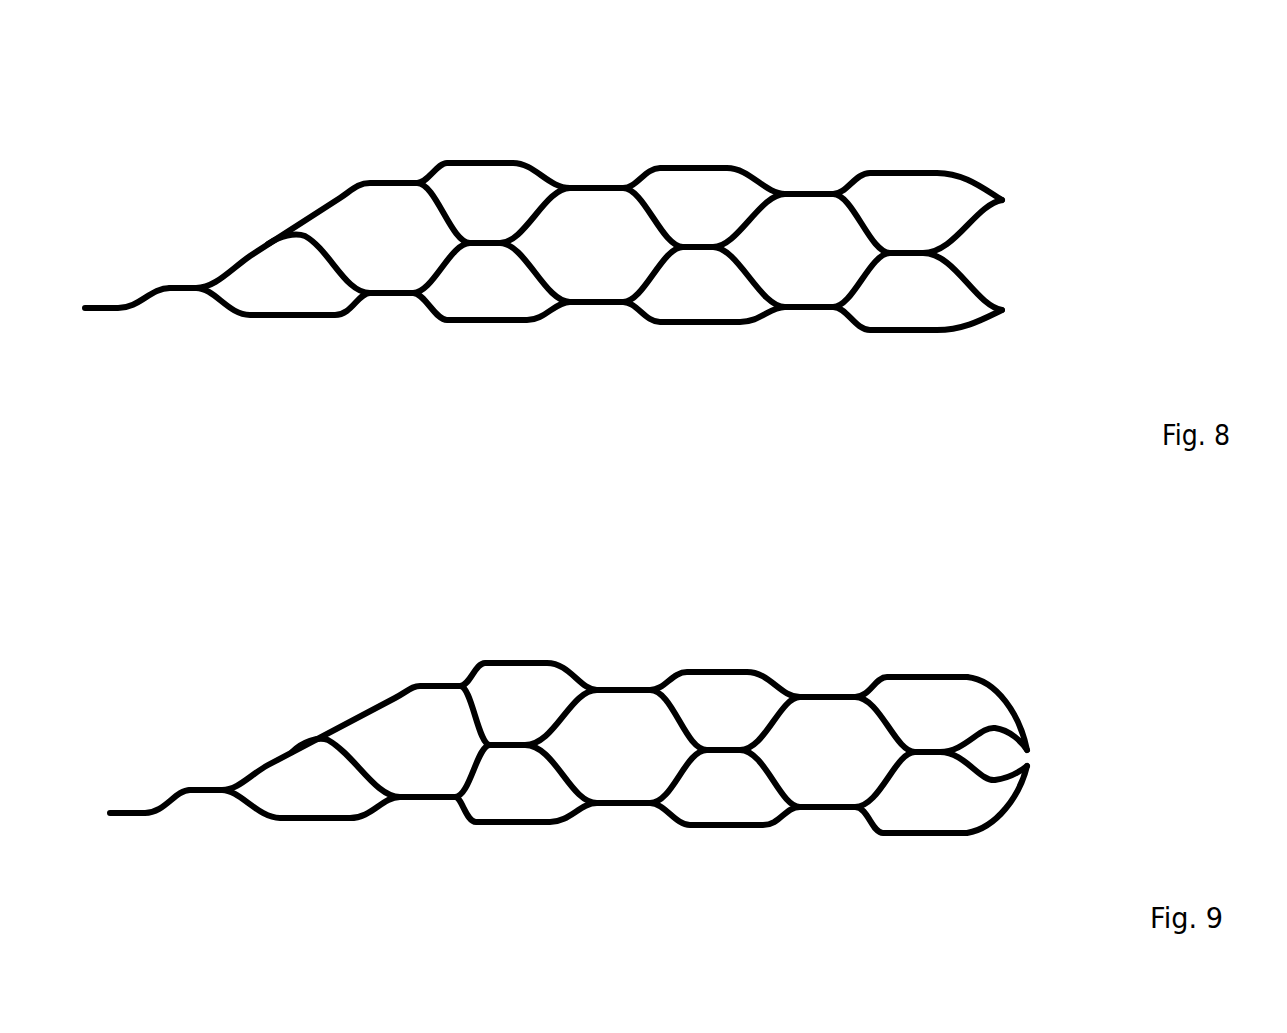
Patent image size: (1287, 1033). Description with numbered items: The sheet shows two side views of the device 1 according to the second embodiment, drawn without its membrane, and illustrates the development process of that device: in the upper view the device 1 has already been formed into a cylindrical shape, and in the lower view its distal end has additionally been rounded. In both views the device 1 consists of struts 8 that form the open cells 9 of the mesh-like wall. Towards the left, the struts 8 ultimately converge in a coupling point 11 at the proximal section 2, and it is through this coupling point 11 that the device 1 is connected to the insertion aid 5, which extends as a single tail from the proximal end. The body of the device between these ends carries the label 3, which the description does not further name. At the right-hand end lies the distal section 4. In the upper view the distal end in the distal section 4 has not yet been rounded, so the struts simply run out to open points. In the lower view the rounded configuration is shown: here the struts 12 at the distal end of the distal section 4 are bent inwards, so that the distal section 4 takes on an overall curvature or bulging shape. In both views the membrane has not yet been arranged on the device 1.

In FIG. 8, the device 1 is at (443, 130).
In FIG. 9, the device 1 is at (502, 612).
In FIG. 8, the proximal section 2 is at (262, 213).
In FIG. 9, the proximal section 2 is at (273, 723).
In FIG. 8, the lower strand / outer wall 3 is at (598, 322).
In FIG. 9, the lower strand / outer wall 3 is at (615, 837).
In FIG. 8, the distal section 4 is at (948, 358).
In FIG. 9, the distal section 4 is at (982, 853).
In FIG. 8, the insertion aid 5 is at (85, 323).
In FIG. 9, the insertion aid 5 is at (110, 827).
In FIG. 8, the struts 8 is at (537, 205).
In FIG. 9, the struts 8 is at (570, 700).
In FIG. 8, the open cells 9 is at (700, 205).
In FIG. 9, the open cells 9 is at (718, 705).
In FIG. 8, the coupling point 11 is at (175, 278).
In FIG. 9, the coupling point 11 is at (207, 783).
In FIG. 9, the struts at the distal end 12 is at (1020, 708).